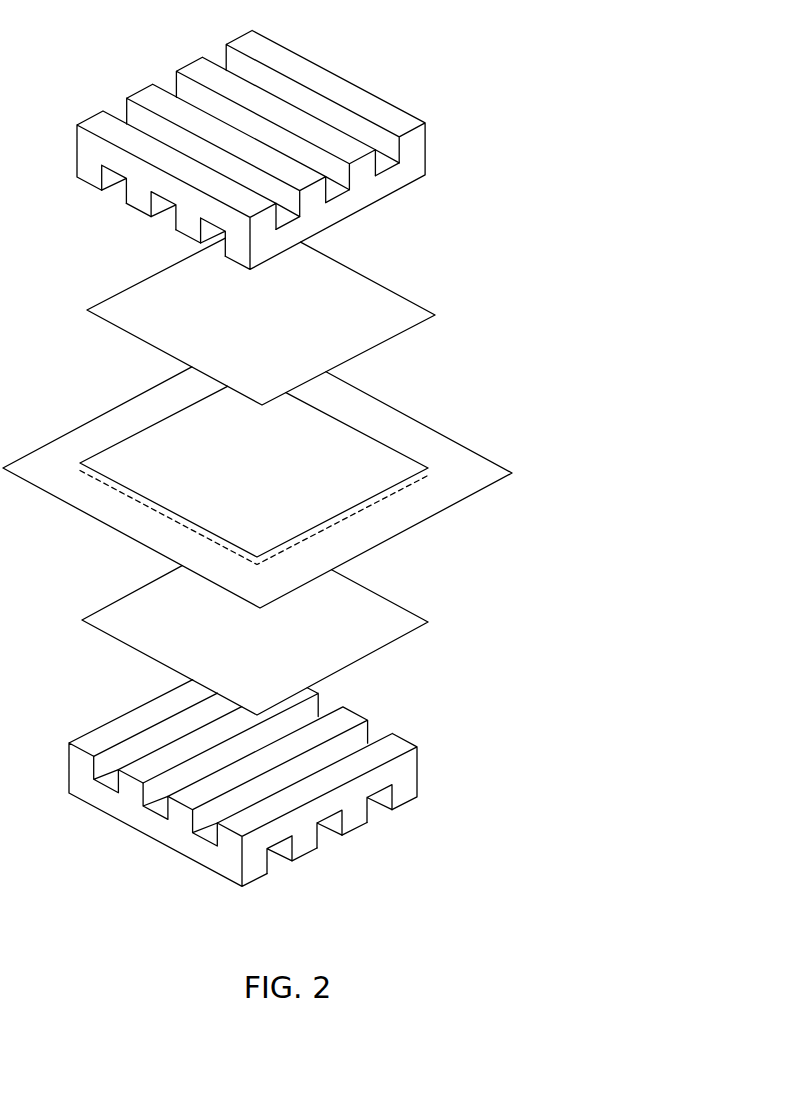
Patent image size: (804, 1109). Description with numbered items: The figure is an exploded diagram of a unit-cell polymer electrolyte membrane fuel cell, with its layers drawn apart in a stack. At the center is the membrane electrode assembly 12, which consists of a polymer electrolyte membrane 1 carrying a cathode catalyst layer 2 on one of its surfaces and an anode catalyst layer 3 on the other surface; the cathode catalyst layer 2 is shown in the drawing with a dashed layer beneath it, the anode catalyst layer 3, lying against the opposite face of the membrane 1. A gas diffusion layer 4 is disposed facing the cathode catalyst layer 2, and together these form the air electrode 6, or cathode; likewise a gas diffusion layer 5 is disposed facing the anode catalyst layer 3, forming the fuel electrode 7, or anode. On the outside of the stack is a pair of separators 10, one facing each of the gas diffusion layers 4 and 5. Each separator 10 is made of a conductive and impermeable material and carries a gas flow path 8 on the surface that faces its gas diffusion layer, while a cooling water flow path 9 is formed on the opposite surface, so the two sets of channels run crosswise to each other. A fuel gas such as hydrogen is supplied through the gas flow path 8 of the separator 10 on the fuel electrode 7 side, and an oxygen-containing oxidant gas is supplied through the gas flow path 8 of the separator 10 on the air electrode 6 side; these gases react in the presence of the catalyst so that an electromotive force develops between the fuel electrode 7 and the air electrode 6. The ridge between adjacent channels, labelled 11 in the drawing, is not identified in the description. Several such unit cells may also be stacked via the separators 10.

The polymer electrolyte membrane 1 is at (473, 477).
The cathode catalyst layer 2 is at (378, 457).
The anode catalyst layer 3 is at (372, 505).
The gas diffusion layer 4 is at (385, 321).
The gas diffusion layer 5 is at (378, 613).
The air electrode 6 is at (580, 333).
The fuel electrode 7 is at (578, 487).
The gas flow path 8 is at (122, 183).
The cooling water flow path 9 is at (170, 82).
The separator 10 is at (415, 150).
The partition wall (rib) 11 is at (192, 802).
The membrane electrode assembly 12 is at (562, 383).